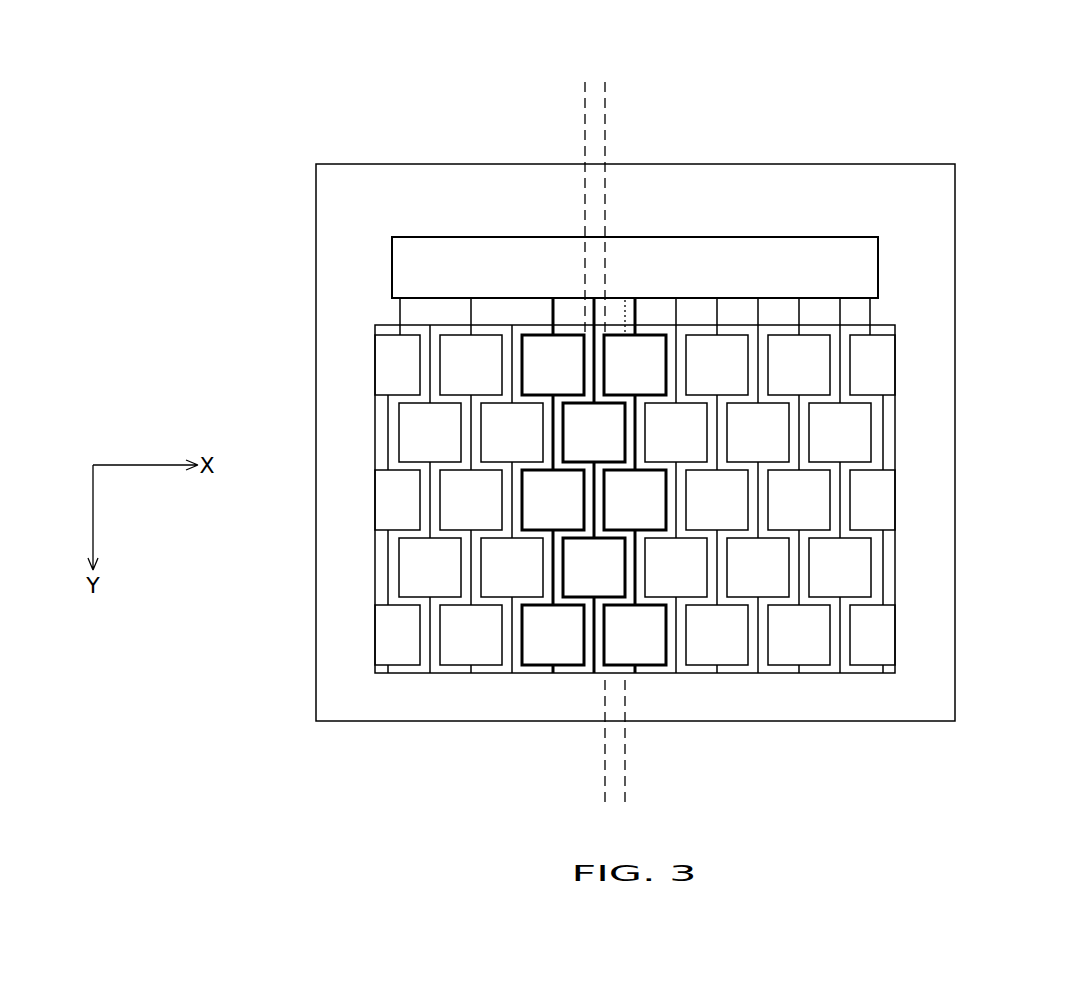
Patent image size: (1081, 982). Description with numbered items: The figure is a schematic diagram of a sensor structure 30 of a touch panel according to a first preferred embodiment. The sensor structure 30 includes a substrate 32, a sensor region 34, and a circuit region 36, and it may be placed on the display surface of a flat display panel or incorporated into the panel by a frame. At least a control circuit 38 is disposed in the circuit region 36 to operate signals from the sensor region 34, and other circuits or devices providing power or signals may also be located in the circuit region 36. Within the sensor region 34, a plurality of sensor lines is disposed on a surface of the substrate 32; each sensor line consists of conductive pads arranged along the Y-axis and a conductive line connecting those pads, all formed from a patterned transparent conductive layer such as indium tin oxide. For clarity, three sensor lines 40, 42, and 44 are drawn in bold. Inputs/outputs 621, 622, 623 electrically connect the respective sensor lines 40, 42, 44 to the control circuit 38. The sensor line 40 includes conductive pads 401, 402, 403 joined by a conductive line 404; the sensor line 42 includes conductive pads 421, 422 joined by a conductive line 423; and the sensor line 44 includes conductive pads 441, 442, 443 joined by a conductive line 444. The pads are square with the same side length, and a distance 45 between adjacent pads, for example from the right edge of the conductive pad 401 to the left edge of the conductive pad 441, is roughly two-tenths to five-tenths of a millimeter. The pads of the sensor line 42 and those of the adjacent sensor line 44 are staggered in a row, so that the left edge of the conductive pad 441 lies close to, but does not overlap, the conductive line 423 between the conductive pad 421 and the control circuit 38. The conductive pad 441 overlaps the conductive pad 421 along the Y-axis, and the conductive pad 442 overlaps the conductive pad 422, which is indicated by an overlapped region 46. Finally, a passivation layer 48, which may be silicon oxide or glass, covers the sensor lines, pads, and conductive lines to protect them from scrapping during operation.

The sensor structure 30 is at (938, 132).
The substrate 32 is at (930, 713).
The sensor region 34 is at (638, 445).
The circuit region 36 is at (906, 277).
The control circuit 38 is at (634, 237).
The sensor line 40 is at (414, 446).
The sensor line 42 is at (434, 446).
The sensor line 44 is at (714, 446).
The distance 45 is at (547, 93).
The overlapped region 46 is at (570, 791).
The passivation layer 48 is at (896, 545).
The conductive pad 401 is at (573, 377).
The conductive pad 402 is at (573, 512).
The conductive pad 403 is at (573, 647).
The conductive line 404 is at (552, 433).
The conductive pad 421 is at (615, 445).
The conductive pad 422 is at (615, 580).
The conductive line 423 is at (592, 518).
The conductive pad 441 is at (656, 377).
The conductive pad 442 is at (656, 512).
The conductive pad 443 is at (656, 647).
The conductive line 444 is at (635, 570).
The input/output 621 is at (552, 318).
The input/output 622 is at (594, 313).
The input/output 623 is at (636, 313).